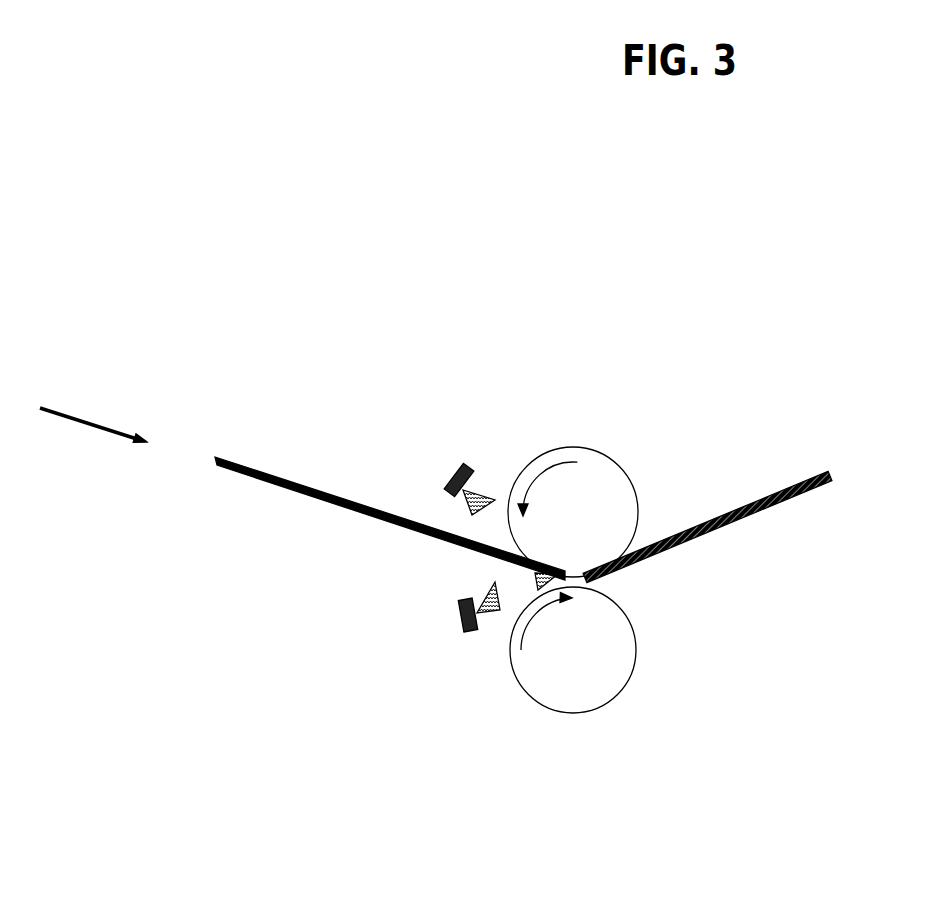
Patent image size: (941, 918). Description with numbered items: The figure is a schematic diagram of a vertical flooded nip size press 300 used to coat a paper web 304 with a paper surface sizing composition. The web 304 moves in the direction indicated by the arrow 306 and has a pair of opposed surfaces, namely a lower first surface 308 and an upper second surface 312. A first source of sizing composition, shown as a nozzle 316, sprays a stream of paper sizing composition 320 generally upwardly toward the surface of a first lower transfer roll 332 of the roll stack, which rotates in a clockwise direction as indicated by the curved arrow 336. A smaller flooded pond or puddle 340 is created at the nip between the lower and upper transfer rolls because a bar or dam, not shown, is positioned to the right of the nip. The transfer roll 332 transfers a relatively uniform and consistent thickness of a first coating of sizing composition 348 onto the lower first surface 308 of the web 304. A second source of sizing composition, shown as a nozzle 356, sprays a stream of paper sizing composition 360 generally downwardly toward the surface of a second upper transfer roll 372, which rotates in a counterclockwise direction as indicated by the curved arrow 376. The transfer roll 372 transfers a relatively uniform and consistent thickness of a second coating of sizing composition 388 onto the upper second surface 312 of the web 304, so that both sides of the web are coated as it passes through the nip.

The vertical flooded nip size press 300 is at (786, 267).
The paper web 304 is at (270, 390).
The arrow 306 is at (92, 422).
The lower first surface 308 is at (262, 480).
The upper second surface 312 is at (297, 482).
The nozzle 316 is at (463, 623).
The stream of paper sizing composition 320 is at (492, 620).
The first lower transfer roll 332 is at (621, 721).
The curved arrow 336 is at (533, 613).
The flooded pond or puddle 340 is at (514, 577).
The first coating of sizing composition 348 is at (813, 492).
The nozzle 356 is at (455, 478).
The stream of paper sizing composition 360 is at (480, 493).
The second upper transfer roll 372 is at (630, 432).
The curved arrow 376 is at (527, 492).
The second coating of sizing composition 388 is at (767, 493).